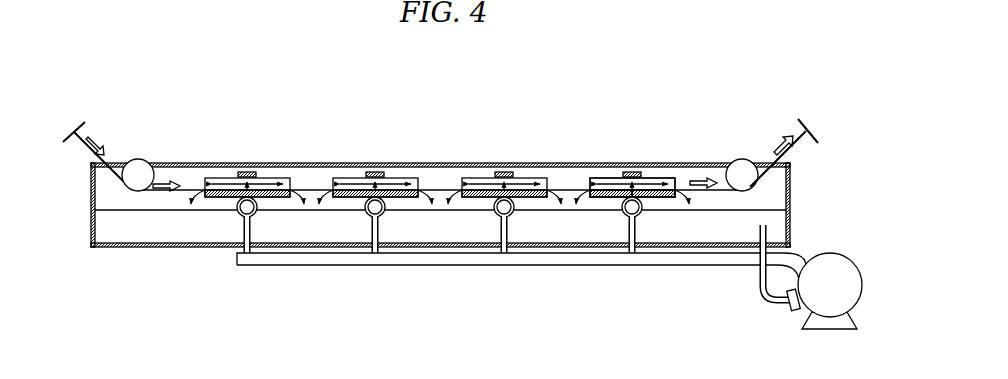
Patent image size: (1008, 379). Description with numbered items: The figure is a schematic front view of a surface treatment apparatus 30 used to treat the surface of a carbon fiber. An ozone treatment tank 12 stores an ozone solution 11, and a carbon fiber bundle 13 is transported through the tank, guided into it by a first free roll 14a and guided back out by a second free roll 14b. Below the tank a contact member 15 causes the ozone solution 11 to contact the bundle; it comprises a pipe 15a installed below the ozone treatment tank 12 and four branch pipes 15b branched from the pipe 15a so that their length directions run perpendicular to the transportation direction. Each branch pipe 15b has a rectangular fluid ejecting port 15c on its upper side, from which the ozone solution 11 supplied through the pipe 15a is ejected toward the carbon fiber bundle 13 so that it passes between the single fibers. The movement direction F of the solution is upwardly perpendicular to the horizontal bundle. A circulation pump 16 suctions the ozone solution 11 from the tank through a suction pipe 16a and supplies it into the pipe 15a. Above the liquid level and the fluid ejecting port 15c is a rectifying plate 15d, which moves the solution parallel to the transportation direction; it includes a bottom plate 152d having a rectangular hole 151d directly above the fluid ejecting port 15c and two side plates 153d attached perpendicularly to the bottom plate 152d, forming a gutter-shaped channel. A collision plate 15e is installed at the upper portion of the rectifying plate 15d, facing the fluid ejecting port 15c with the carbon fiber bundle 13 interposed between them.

The surface treatment apparatus 30 is at (492, 140).
The ozone solution 11 is at (95, 230).
The ozone treatment tank 12 is at (165, 246).
The carbon fiber bundle 13 is at (106, 162).
The first free roll 14a is at (141, 159).
The second free roll 14b is at (733, 161).
The contact member 15 is at (378, 268).
The pipe 15a is at (432, 266).
The branch pipe 15b is at (234, 204).
The fluid ejecting port 15c is at (245, 197).
The rectifying plate 15d is at (745, 316).
The collision plate 15e is at (632, 174).
The rectangular hole 151d is at (639, 200).
The bottom plate 152d is at (664, 194).
The side plate 153d is at (676, 181).
The circulation pump 16 is at (840, 243).
The suction pipe 16a is at (766, 303).
The movement direction F is at (320, 196).